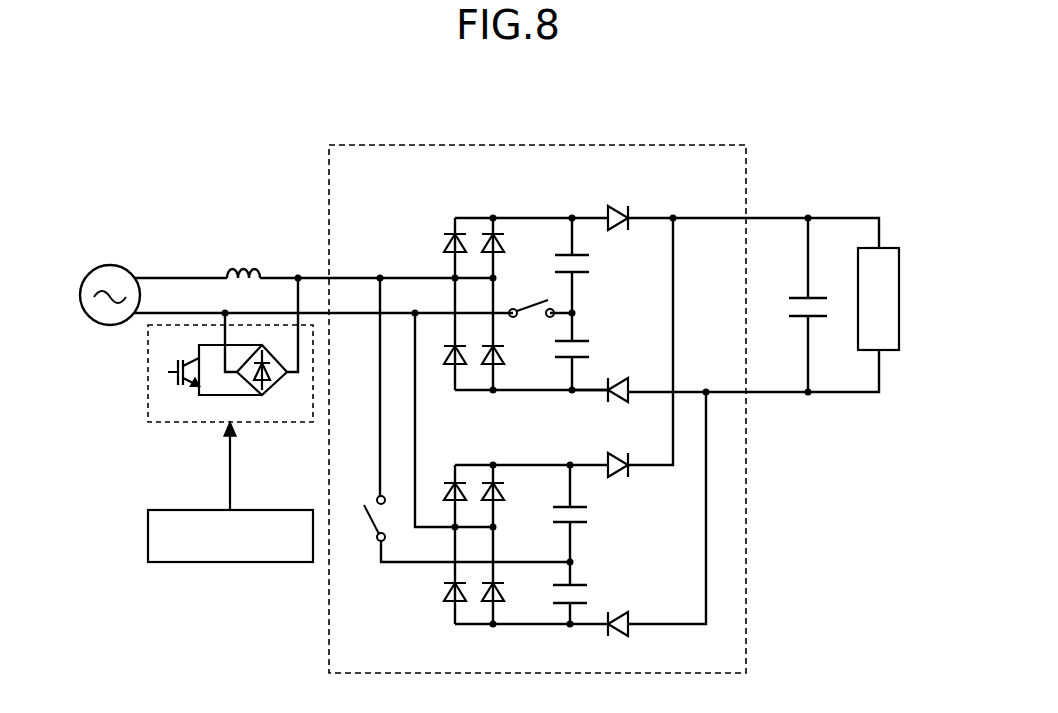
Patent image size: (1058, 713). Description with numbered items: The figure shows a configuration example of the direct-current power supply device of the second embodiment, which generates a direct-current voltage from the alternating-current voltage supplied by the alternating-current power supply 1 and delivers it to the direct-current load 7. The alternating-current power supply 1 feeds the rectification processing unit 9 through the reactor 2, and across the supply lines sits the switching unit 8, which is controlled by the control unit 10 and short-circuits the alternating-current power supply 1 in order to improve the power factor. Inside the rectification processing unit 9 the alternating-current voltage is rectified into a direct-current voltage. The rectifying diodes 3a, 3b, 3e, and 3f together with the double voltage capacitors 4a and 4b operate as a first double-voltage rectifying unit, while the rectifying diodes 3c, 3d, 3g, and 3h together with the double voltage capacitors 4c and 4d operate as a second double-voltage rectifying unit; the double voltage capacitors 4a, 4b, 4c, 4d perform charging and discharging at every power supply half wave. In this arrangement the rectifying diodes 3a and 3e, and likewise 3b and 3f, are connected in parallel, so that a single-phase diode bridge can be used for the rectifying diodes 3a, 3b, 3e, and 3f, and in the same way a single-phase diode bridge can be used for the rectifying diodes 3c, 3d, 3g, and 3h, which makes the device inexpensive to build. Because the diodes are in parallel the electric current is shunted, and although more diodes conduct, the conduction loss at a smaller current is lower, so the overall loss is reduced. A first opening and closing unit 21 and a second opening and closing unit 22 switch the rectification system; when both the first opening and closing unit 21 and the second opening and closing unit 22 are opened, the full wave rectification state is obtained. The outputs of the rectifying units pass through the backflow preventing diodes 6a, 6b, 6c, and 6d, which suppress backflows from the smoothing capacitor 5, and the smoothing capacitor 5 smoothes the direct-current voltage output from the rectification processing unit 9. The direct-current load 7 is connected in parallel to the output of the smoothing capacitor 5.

The alternating-current power supply 1 is at (113, 265).
The reactor 2 is at (245, 260).
The rectifying diode 3a is at (444, 241).
The rectifying diode 3b is at (450, 366).
The rectifying diode 3c is at (454, 483).
The rectifying diode 3d is at (448, 603).
The rectifying diode 3e is at (506, 239).
The rectifying diode 3f is at (496, 366).
The rectifying diode 3g is at (491, 482).
The rectifying diode 3h is at (490, 603).
The double voltage capacitor 4a is at (580, 250).
The double voltage capacitor 4b is at (578, 359).
The double voltage capacitor 4c is at (554, 505).
The double voltage capacitor 4d is at (562, 605).
The smoothing capacitor 5 is at (822, 295).
The backflow preventing diode 6a is at (618, 205).
The backflow preventing diode 6b is at (613, 379).
The backflow preventing diode 6c is at (624, 477).
The backflow preventing diode 6d is at (616, 612).
The direct-current load 7 is at (887, 247).
The switching unit 8 is at (289, 423).
The rectification processing unit 9 is at (747, 598).
The control unit 10 is at (285, 563).
The first opening and closing unit 21 is at (534, 300).
The second opening and closing unit 22 is at (373, 525).